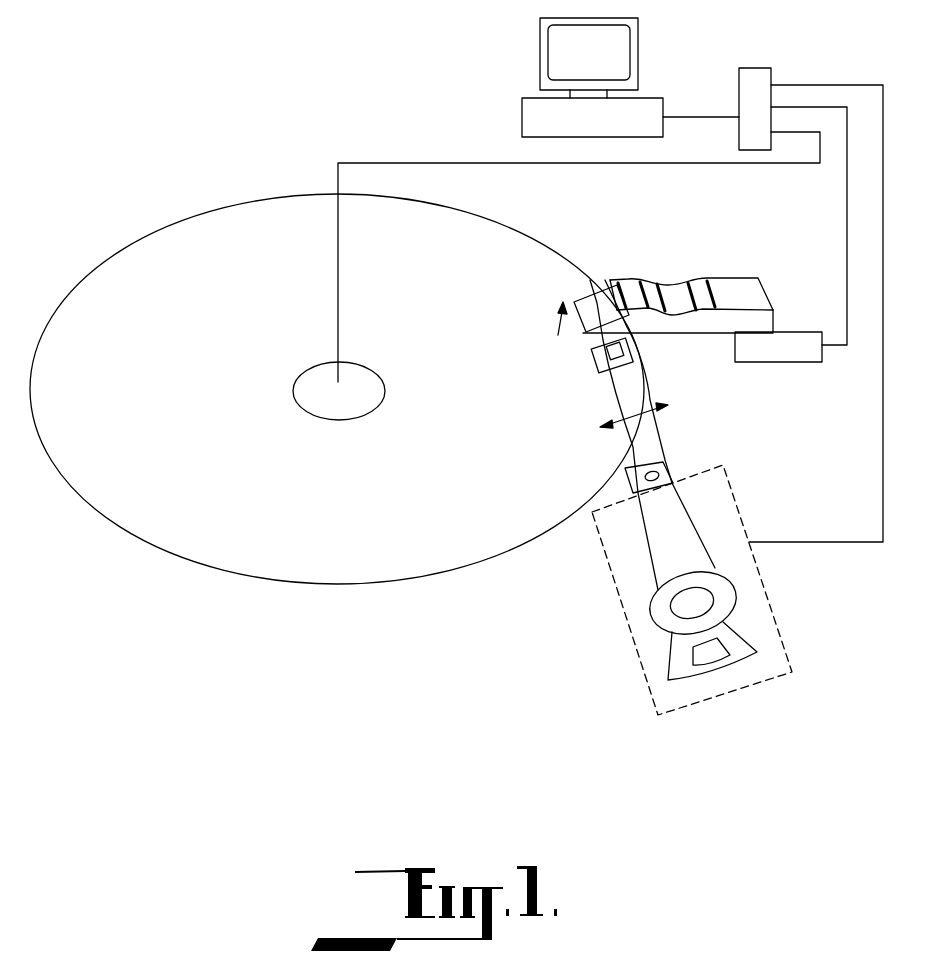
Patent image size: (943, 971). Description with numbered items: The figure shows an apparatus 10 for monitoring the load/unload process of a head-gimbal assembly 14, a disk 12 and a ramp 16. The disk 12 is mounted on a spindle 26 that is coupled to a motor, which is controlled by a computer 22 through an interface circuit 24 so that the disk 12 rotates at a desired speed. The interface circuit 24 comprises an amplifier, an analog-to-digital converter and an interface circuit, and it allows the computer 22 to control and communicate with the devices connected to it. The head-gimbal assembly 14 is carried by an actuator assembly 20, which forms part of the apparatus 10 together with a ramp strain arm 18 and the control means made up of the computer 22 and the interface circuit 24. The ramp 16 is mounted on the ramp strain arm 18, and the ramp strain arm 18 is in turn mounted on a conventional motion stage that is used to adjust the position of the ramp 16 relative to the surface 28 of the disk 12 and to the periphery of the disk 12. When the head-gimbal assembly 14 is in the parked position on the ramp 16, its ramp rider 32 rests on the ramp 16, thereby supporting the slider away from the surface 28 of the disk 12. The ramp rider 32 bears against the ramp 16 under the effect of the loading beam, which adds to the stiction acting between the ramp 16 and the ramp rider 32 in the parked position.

The apparatus 10 is at (173, 623).
The disk 12 is at (143, 242).
The head-gimbal assembly 14 is at (662, 443).
The ramp 16 is at (715, 278).
The ramp strain arm 18 is at (813, 330).
The actuator assembly 20 is at (628, 620).
The computer 22 is at (540, 52).
The interface circuit 24 is at (757, 68).
The spindle 26 is at (318, 363).
The surface of the disk 28 is at (383, 513).
The ramp rider 32 is at (593, 287).